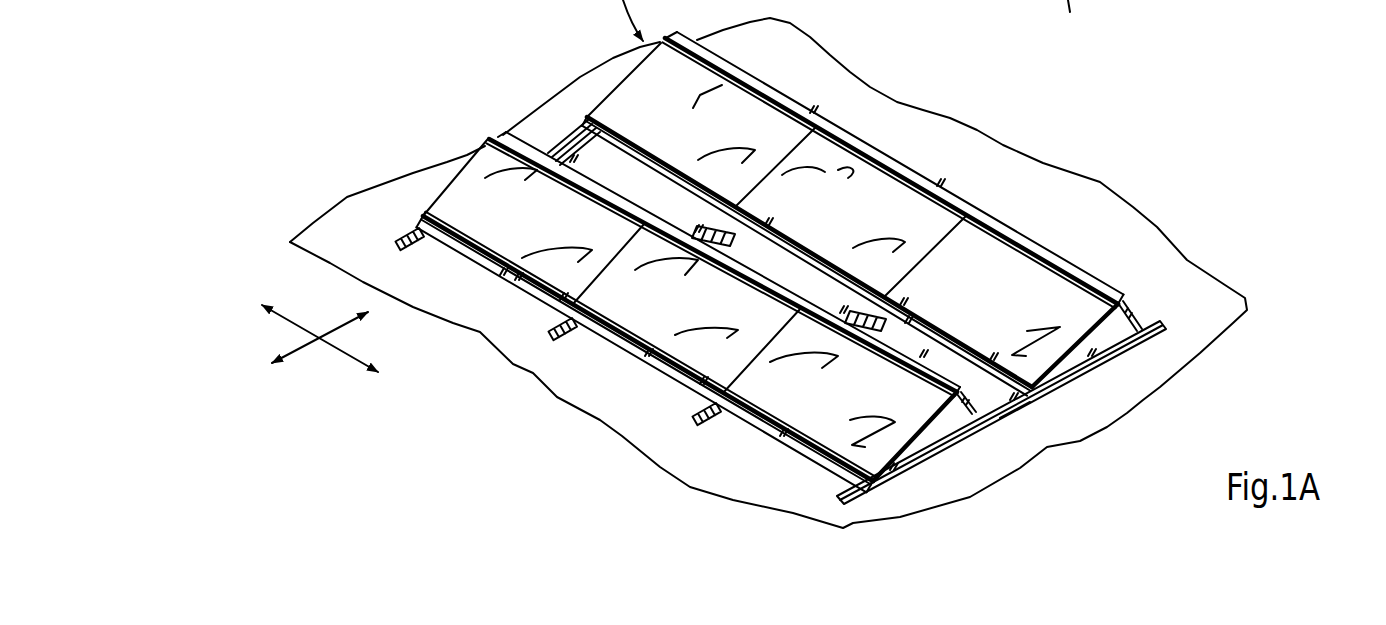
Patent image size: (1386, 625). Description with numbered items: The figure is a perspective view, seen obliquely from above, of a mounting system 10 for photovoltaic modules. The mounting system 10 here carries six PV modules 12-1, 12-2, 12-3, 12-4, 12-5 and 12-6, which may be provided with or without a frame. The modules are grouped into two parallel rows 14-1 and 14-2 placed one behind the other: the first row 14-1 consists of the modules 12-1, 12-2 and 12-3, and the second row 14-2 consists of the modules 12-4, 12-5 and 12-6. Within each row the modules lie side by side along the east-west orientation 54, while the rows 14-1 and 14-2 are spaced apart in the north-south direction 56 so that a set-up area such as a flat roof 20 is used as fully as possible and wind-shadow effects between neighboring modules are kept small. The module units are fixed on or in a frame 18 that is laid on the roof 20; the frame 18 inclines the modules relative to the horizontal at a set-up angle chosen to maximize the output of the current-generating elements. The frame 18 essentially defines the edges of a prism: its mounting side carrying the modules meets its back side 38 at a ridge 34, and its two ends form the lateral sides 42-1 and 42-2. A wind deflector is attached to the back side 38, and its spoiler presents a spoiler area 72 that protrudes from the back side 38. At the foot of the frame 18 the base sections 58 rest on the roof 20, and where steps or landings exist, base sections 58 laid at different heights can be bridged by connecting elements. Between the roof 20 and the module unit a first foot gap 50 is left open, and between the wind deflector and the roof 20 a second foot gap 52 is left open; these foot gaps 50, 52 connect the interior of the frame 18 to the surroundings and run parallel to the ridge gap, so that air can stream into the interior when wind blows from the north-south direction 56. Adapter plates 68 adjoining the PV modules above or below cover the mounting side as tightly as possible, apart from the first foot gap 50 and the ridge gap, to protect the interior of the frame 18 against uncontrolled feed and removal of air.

The mounting system 10 is at (1042, 140).
The PV module 12-1 is at (687, 130).
The PV module 12-2 is at (825, 220).
The PV module 12-3 is at (990, 314).
The PV module 12-4 is at (515, 230).
The PV module 12-5 is at (665, 314).
The PV module 12-6 is at (820, 407).
The first row 14-1 is at (807, 194).
The second row 14-2 is at (632, 288).
The frame 18 is at (1018, 420).
The roof 20 is at (1157, 227).
The ridge 34 is at (871, 147).
The back side 38 is at (1077, 268).
The lateral side 42-1 is at (930, 439).
The lateral side 42-2 is at (482, 139).
The first foot gap 50 is at (492, 283).
The second foot gap 52 is at (1139, 317).
The east-west orientation 54 is at (338, 366).
The north-south direction 56 is at (338, 336).
The base section 58 is at (397, 231).
The adapter plate 68 is at (519, 294).
The spoiler area 72 is at (948, 166).